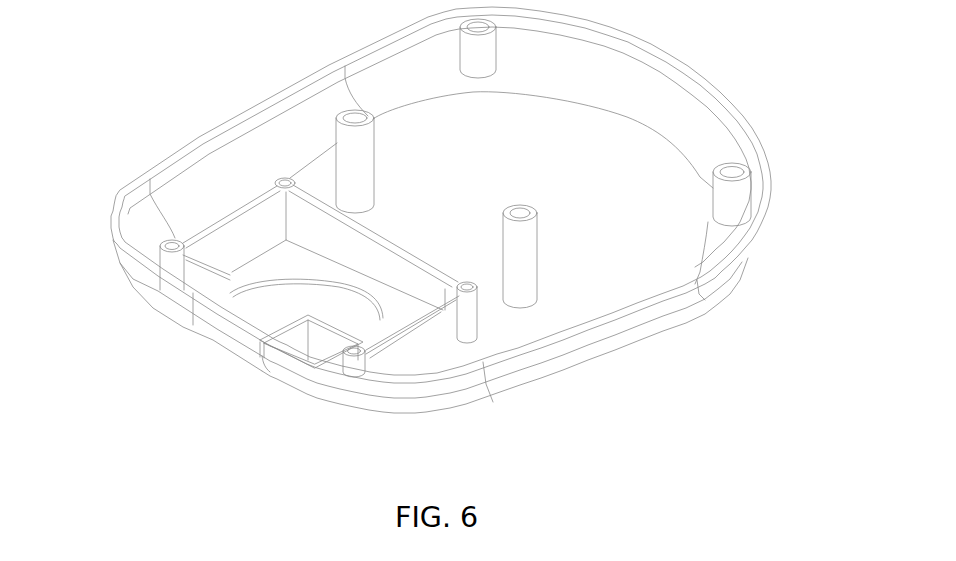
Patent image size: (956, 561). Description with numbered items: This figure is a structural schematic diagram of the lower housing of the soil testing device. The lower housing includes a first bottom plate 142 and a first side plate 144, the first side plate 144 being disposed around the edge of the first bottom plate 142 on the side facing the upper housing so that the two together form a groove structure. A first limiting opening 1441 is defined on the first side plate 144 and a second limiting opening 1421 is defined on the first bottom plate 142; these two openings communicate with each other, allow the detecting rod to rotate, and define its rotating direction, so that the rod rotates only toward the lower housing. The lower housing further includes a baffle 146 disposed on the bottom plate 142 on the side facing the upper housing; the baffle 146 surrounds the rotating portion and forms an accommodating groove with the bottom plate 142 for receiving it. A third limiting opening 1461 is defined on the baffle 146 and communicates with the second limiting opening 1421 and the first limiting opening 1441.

The first bottom plate 142 is at (590, 278).
The second limiting opening 1421 is at (350, 317).
The first side plate 144 is at (532, 367).
The first limiting opening 1441 is at (229, 347).
The baffle 146 is at (318, 342).
The third limiting opening 1461 is at (260, 327).